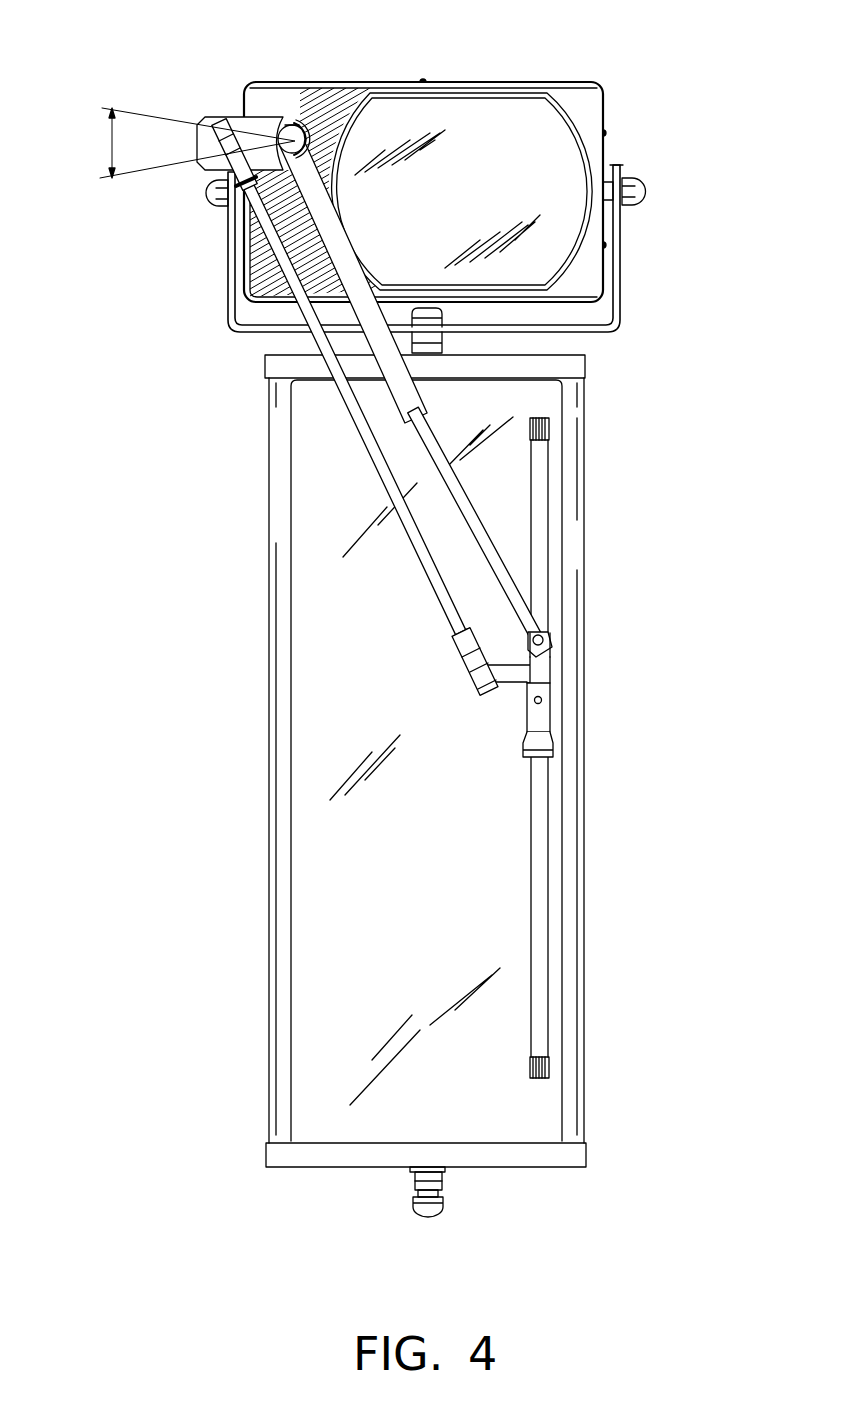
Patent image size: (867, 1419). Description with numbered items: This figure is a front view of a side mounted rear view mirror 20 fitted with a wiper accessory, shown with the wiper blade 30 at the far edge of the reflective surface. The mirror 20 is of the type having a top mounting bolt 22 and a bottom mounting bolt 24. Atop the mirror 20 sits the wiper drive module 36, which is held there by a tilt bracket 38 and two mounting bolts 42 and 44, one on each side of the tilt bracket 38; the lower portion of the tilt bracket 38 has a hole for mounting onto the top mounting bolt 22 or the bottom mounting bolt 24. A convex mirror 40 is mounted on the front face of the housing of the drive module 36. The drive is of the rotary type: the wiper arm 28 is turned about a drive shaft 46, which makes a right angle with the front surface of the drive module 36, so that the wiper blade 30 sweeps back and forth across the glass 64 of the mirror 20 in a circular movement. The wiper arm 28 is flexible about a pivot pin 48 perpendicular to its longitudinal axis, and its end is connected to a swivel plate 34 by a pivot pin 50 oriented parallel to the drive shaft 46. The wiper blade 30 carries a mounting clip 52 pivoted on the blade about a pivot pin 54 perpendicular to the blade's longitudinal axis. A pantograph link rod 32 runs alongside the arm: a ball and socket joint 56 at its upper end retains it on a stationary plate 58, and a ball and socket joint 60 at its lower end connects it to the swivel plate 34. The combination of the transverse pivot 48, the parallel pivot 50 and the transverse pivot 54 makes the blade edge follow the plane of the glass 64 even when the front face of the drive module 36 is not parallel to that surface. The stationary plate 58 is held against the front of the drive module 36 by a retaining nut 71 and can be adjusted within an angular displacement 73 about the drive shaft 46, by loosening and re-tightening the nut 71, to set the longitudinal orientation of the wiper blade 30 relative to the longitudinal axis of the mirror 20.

The rear view mirror 20 is at (268, 797).
The top mounting bolt 22 is at (443, 345).
The bottom mounting bolt 24 is at (445, 1187).
The wiper arm 28 is at (352, 253).
The wiper blade 30 is at (542, 910).
The pantograph link rod 32 is at (378, 467).
The swivel plate 34 is at (510, 678).
The wiper drive module 36 is at (448, 82).
The tilt bracket 38 is at (622, 292).
The convex mirror 40 is at (530, 122).
The mounting bolt 42 is at (640, 192).
The mounting bolt 44 is at (213, 205).
The drive shaft 46 is at (262, 101).
The pivot pin 48 is at (312, 128).
The pivot pin 50 is at (552, 642).
The mounting clip 52 is at (542, 722).
The pivot pin 54 is at (558, 752).
The ball and socket joint 56 is at (238, 167).
The stationary plate 58 is at (215, 113).
The ball and socket joint 60 is at (463, 658).
The glass 64 is at (340, 952).
The retaining nut 71 is at (294, 122).
The angular displacement 73 is at (176, 143).